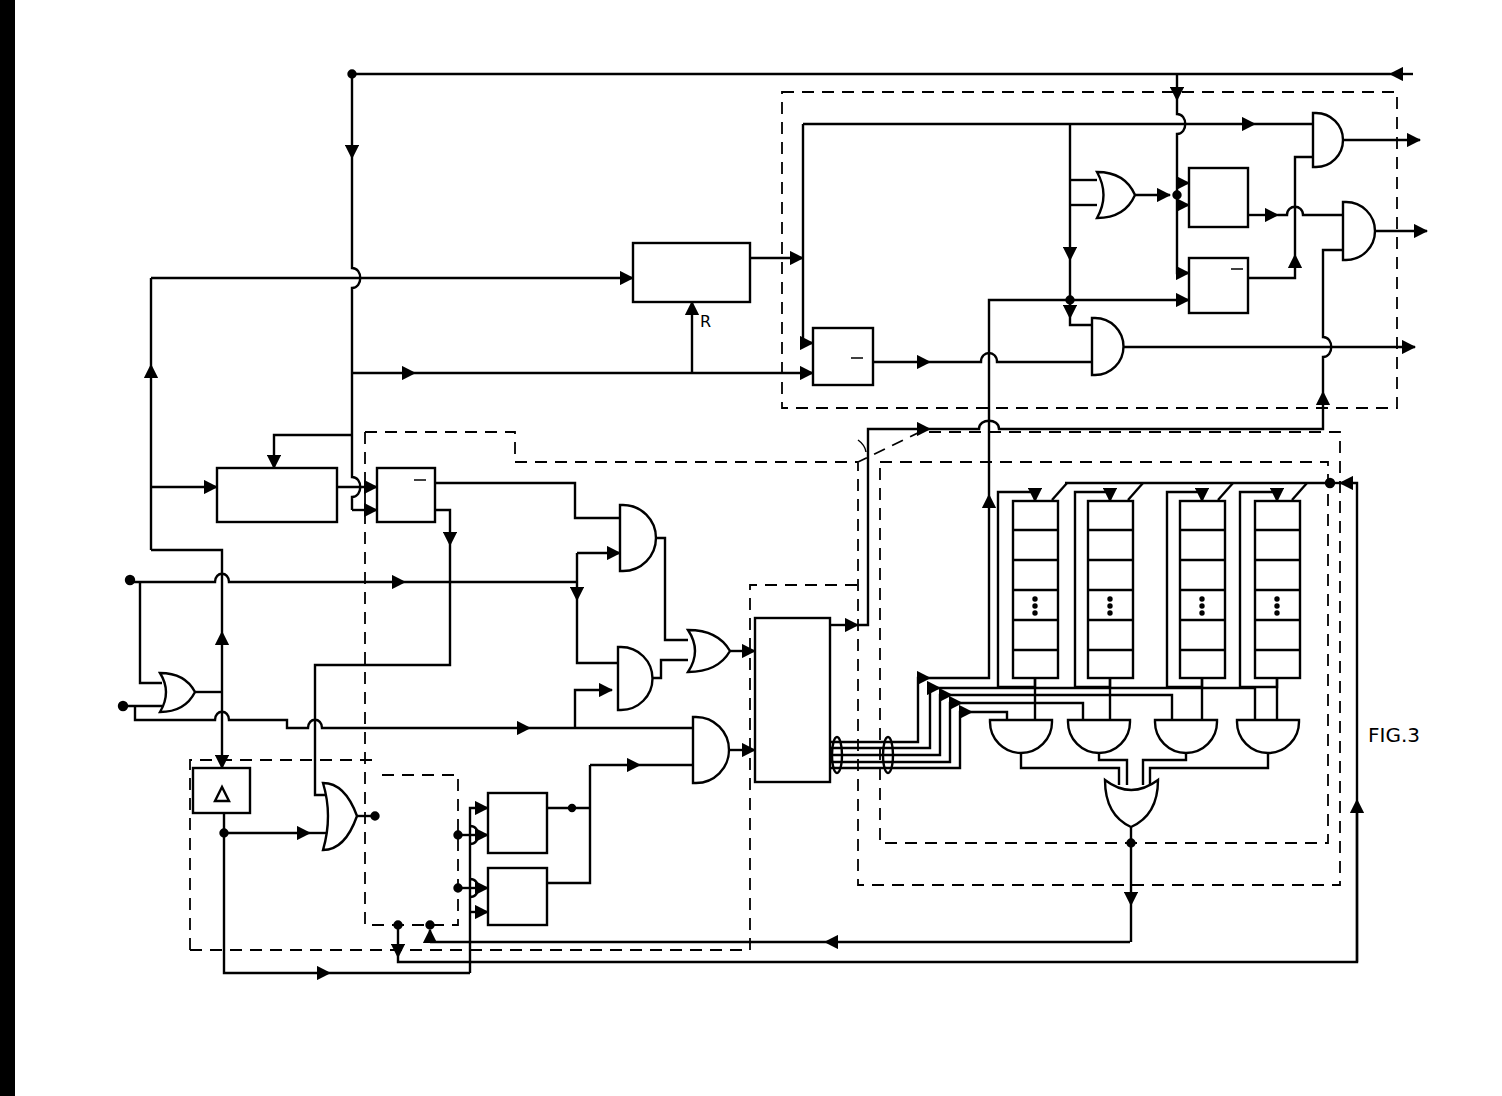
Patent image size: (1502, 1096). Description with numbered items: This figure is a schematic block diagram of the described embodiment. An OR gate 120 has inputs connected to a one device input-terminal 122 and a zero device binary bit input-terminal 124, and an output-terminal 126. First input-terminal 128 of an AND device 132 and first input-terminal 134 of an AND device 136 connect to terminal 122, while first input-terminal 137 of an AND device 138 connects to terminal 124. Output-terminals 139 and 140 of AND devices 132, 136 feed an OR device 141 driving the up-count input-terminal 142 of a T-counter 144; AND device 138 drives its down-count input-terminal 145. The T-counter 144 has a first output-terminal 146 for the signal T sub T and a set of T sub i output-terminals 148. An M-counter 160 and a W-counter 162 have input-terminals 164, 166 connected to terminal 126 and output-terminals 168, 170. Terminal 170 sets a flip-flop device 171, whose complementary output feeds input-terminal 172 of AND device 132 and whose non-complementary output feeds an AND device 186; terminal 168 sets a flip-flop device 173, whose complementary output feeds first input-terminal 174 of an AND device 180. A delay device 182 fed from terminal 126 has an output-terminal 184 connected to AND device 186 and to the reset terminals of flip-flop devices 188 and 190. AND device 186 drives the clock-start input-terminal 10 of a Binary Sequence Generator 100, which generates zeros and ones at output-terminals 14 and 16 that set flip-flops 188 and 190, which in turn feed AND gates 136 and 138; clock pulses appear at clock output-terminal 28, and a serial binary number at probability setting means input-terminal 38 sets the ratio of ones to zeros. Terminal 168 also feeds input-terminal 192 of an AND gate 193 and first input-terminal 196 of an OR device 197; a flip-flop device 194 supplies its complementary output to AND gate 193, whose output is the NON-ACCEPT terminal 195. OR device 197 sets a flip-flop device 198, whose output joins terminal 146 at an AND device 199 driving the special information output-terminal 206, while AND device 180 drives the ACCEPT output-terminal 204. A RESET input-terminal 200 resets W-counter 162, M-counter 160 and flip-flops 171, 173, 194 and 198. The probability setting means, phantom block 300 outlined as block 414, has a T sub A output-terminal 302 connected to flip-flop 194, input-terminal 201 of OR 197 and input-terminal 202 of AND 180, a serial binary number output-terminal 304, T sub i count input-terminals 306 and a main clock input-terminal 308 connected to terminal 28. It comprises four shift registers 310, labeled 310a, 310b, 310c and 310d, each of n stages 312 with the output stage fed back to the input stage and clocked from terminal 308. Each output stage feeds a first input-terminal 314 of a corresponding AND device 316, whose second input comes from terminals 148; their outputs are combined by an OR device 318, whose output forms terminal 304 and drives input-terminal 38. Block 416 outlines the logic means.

The clock-start input-terminal 10 is at (378, 818).
The 0 output-terminal 14 is at (456, 832).
The 1 output-terminal 16 is at (456, 886).
The clock output-terminal 28 is at (400, 925).
The probability setting means input-terminal 38 is at (440, 912).
The Binary Sequence Generator 100 is at (378, 888).
The OR gate 120 is at (175, 673).
The 1 device input-terminal 122 is at (134, 584).
The 0 device binary bit input-terminal 124 is at (130, 708).
The output-terminal of OR device 120 126 is at (224, 690).
The first input-terminal of AND device 132 128 is at (600, 556).
The AND device 132 is at (636, 505).
The first input-terminal of AND device 136 134 is at (596, 660).
The AND device 136 is at (645, 706).
The first input-terminal of AND device 138 137 is at (414, 723).
The AND device 138 is at (706, 783).
The output-terminal of AND device 132 139 is at (662, 535).
The output-terminal of AND device 136 140 is at (648, 660).
The OR device 141 is at (700, 632).
The up count input-terminal 142 is at (745, 655).
The T-counter 144 is at (772, 618).
The down-count input-terminal 145 is at (742, 748).
The first output-terminal 146 is at (875, 628).
The T sub i output-terminals 148 is at (830, 780).
The M-counter 160 is at (700, 243).
The W-counter 162 is at (300, 530).
The input-terminal of M-counter 164 is at (615, 276).
The input-terminal of W-counter 166 is at (152, 485).
The output-terminal of M-counter 168 is at (778, 258).
The output-terminal of W-counter 170 is at (355, 512).
The flip-flop device 171 is at (390, 468).
The input-terminal of AND device 132 172 is at (578, 505).
The flip-flop device 173 is at (850, 328).
The first input-terminal of AND device 180 174 is at (1098, 362).
The AND device 180 is at (1122, 358).
The delay device 182 is at (192, 765).
The output-terminal of delay device 184 is at (220, 834).
The AND device 186 is at (352, 788).
The flip-flop device 188 is at (538, 793).
The flip-flop device 190 is at (540, 925).
The input-terminal of AND gate 193 192 is at (1246, 124).
The AND gate 193 is at (1325, 160).
The flip-flop device 194 is at (1205, 313).
The device output-terminal N 195 is at (1398, 148).
The first input-terminal of OR device 197 196 is at (1093, 182).
The OR device 197 is at (1125, 168).
The flip-flop device 198 is at (1207, 168).
The AND device 199 is at (1352, 262).
The RESET input-terminal 200 is at (1440, 103).
The input-terminal of OR 197 201 is at (1093, 206).
The input-terminal of AND 180 202 is at (1072, 332).
The device output-terminal C 204 is at (1420, 355).
The device output-terminal B 206 is at (1392, 240).
The probability setting means 300 is at (1005, 843).
The T sub A counter output-terminal 302 is at (988, 470).
The serial binary number signal output-terminal 304 is at (1135, 848).
The T sub i count input-terminals 306 is at (878, 770).
The main clock input-terminal 308 is at (1338, 480).
The shift registers 310 is at (1302, 516).
The shift register 310a is at (1273, 578).
The shift register 310b is at (1200, 578).
The shift register 310c is at (1110, 578).
The shift register 310d is at (1032, 578).
The shift register stages 312 is at (1302, 613).
The first input-terminal of AND device 316 314 is at (1205, 718).
The AND device 316 is at (1190, 764).
The OR device 318 is at (1158, 803).
The probability setting means block 414 is at (1345, 882).
The logic means block 416 is at (1362, 410).